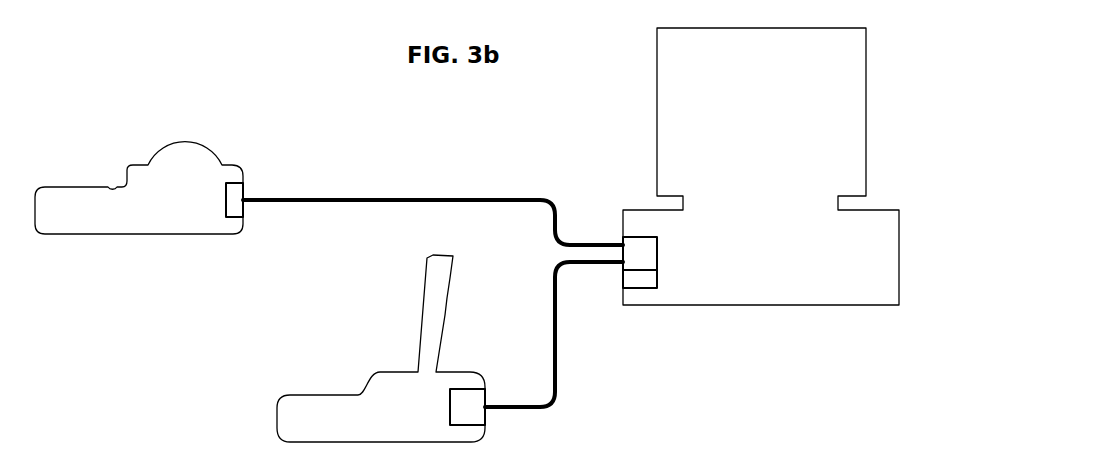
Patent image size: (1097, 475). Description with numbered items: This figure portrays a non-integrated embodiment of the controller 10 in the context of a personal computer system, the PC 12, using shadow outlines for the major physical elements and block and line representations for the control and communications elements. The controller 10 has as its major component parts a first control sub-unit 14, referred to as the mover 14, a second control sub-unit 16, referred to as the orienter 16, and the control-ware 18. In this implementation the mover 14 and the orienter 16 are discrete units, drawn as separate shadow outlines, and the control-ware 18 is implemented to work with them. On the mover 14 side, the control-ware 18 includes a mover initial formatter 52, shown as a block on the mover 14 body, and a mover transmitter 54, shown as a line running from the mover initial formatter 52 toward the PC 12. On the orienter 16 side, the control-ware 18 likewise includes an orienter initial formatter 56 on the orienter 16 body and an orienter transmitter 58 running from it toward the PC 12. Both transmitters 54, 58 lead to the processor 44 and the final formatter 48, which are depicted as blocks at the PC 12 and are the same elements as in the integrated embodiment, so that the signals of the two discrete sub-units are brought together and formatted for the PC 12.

The controller 10 is at (366, 81).
The personal computer system 12 is at (775, 142).
The first control sub-unit 14 is at (295, 415).
The second control sub-unit 16 is at (68, 207).
The control-ware 18 is at (531, 118).
The processor 44 is at (640, 253).
The final formatter 48 is at (642, 278).
The mover initial formatter 52 is at (467, 408).
The mover transmitter 54 is at (555, 378).
The orienter initial formatter 56 is at (235, 200).
The orienter transmitter 58 is at (410, 198).